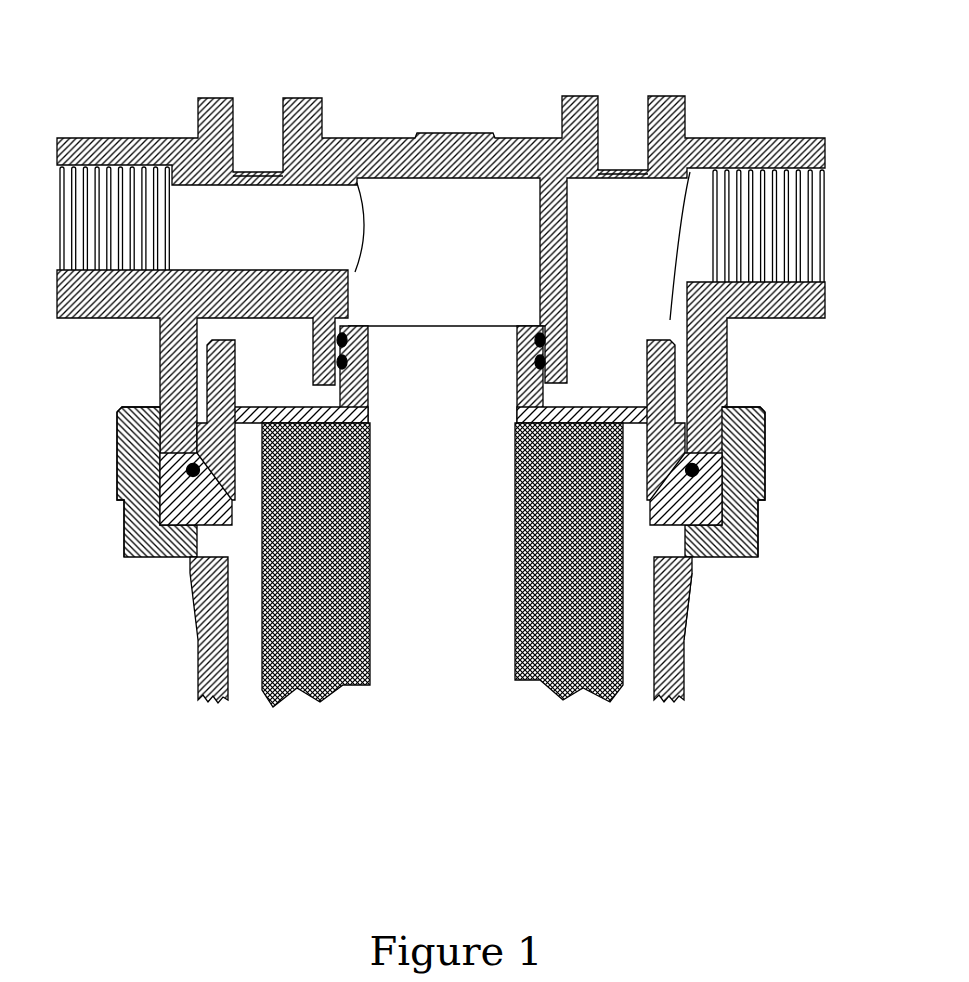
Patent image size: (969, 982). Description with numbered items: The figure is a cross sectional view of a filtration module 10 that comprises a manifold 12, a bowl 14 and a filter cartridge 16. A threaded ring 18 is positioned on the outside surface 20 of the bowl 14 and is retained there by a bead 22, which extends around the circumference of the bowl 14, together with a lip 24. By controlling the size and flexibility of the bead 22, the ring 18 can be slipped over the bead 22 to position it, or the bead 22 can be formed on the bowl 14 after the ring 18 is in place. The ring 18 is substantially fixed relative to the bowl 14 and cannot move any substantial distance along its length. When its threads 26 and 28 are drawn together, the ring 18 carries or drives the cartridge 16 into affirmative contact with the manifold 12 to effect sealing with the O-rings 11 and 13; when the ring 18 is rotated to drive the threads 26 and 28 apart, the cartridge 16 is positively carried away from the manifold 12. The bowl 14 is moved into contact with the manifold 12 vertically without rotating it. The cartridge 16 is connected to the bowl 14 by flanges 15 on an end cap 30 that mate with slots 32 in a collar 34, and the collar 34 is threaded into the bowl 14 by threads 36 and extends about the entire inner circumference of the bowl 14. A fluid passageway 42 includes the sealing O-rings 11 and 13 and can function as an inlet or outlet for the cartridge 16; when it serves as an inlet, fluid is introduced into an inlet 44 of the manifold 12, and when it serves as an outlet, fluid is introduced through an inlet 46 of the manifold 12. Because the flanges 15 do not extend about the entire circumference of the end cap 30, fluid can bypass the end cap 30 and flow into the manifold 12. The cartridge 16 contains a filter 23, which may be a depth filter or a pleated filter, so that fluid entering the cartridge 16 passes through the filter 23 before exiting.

The filtration module 10 is at (452, 105).
The O-ring 11 is at (530, 358).
The manifold 12 is at (705, 145).
The O-ring 13 is at (545, 357).
The bowl 14 is at (678, 637).
The flanges 15 is at (197, 380).
The filter cartridge 16 is at (372, 607).
The threaded ring 18 is at (767, 408).
The outside surface 20 is at (165, 567).
The bead 22 is at (190, 570).
The filter 23 is at (517, 603).
The lip 24 is at (760, 508).
The threads 26 is at (118, 442).
The threads 28 is at (118, 410).
The end cap 30 is at (598, 408).
The slots 32 is at (233, 397).
The collar 34 is at (665, 355).
The threads 36 is at (222, 478).
The fluid passageway 42 is at (432, 360).
The inlet 44 is at (107, 233).
The inlet 46 is at (780, 232).